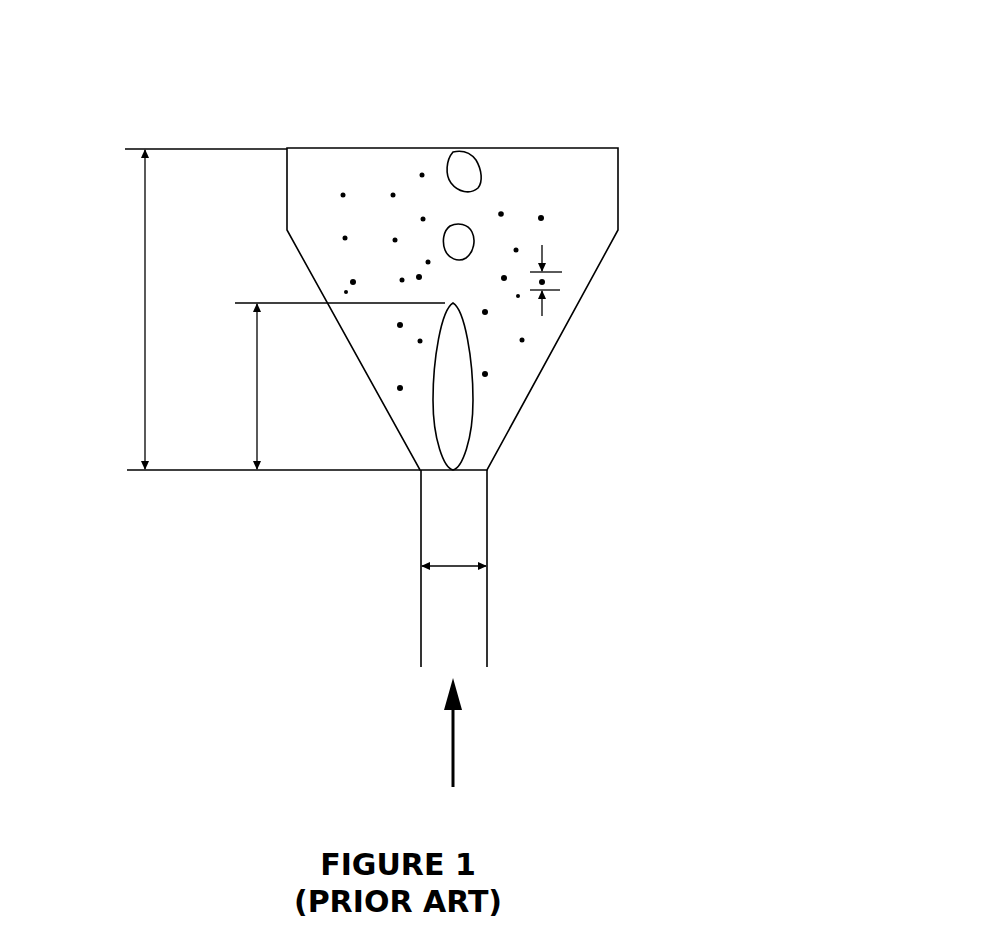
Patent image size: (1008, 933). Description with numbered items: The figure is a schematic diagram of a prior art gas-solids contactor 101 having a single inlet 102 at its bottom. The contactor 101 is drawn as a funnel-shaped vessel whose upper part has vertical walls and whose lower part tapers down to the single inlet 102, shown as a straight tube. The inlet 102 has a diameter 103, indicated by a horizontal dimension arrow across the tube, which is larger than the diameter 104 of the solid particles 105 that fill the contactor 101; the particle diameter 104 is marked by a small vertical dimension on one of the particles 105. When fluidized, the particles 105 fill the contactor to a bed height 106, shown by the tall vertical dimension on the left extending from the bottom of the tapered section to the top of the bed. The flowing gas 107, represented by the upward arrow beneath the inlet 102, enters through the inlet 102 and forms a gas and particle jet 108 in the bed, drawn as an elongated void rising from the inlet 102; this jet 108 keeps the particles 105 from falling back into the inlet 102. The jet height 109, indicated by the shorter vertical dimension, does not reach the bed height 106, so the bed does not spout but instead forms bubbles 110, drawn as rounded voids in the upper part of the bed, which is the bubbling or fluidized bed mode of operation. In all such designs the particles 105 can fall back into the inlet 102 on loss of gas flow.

The gas-solids contactor 101 is at (453, 148).
The single inlet 102 is at (420, 608).
The inlet diameter 103 is at (488, 555).
The particle diameter 104 is at (563, 272).
The solid particles 105 is at (545, 203).
The bed height 106 is at (144, 312).
The flowing gas 107 is at (456, 745).
The gas and particle jet 108 is at (474, 371).
The jet height 109 is at (256, 385).
The bubbles 110 is at (478, 240).